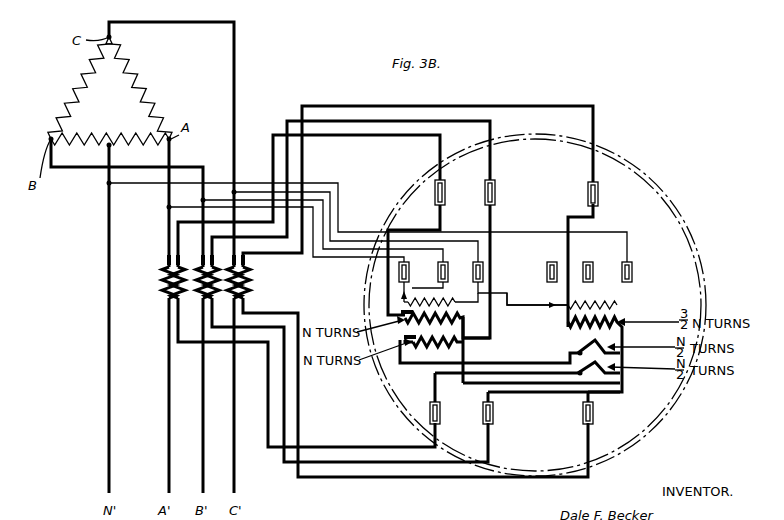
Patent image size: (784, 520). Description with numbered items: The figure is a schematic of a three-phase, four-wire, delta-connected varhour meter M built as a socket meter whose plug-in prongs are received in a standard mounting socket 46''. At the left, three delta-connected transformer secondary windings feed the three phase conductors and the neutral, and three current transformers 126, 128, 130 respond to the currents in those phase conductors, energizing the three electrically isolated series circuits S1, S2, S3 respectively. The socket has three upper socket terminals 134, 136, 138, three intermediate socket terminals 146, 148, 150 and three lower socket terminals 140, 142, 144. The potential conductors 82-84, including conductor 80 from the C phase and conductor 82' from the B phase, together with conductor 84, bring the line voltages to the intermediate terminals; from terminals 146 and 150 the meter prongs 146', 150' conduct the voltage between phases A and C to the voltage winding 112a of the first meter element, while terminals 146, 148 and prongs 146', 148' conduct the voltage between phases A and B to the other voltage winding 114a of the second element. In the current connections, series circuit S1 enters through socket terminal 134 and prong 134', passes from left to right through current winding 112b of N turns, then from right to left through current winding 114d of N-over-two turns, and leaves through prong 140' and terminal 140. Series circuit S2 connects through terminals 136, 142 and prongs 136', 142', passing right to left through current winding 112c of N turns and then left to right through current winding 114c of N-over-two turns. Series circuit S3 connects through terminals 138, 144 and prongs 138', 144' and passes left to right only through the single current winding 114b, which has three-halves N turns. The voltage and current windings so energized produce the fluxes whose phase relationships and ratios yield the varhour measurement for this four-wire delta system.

The potential conductor 80 is at (236, 186).
The potential conductor 82' is at (340, 205).
The potential conductors 82-84 is at (172, 209).
The potential conductor 84 is at (509, 306).
The current transformer 126 is at (163, 279).
The current transformer 128 is at (198, 290).
The current transformer 130 is at (247, 284).
The series circuit S1 is at (327, 135).
The series circuit S2 is at (324, 121).
The series circuit S3 is at (358, 106).
The mounting socket 46'' is at (535, 305).
The varhour meter M is at (400, 205).
The upper socket terminal 134 is at (426, 176).
The meter prong 134' is at (417, 217).
The upper socket terminal 136 is at (477, 181).
The meter prong 136' is at (511, 201).
The upper socket terminal 138 is at (576, 183).
The meter prong 138' is at (613, 204).
The intermediate socket terminal 146 is at (366, 269).
The meter prong 146' is at (365, 286).
The intermediate socket terminal 148 is at (451, 262).
The meter prong 148' is at (425, 278).
The intermediate socket terminal 150 is at (502, 258).
The meter prong 150' is at (511, 277).
The potential winding 112a is at (400, 301).
The current winding 112b is at (398, 318).
The current winding 112c is at (400, 362).
The potential winding 114a is at (617, 304).
The current winding 114b is at (617, 318).
The current winding 114c is at (590, 343).
The current winding 114d is at (578, 367).
The lower socket terminal 140 is at (403, 413).
The meter prong 140' is at (417, 387).
The lower socket terminal 142 is at (471, 417).
The meter prong 142' is at (471, 393).
The lower socket terminal 144 is at (567, 418).
The meter prong 144' is at (564, 399).